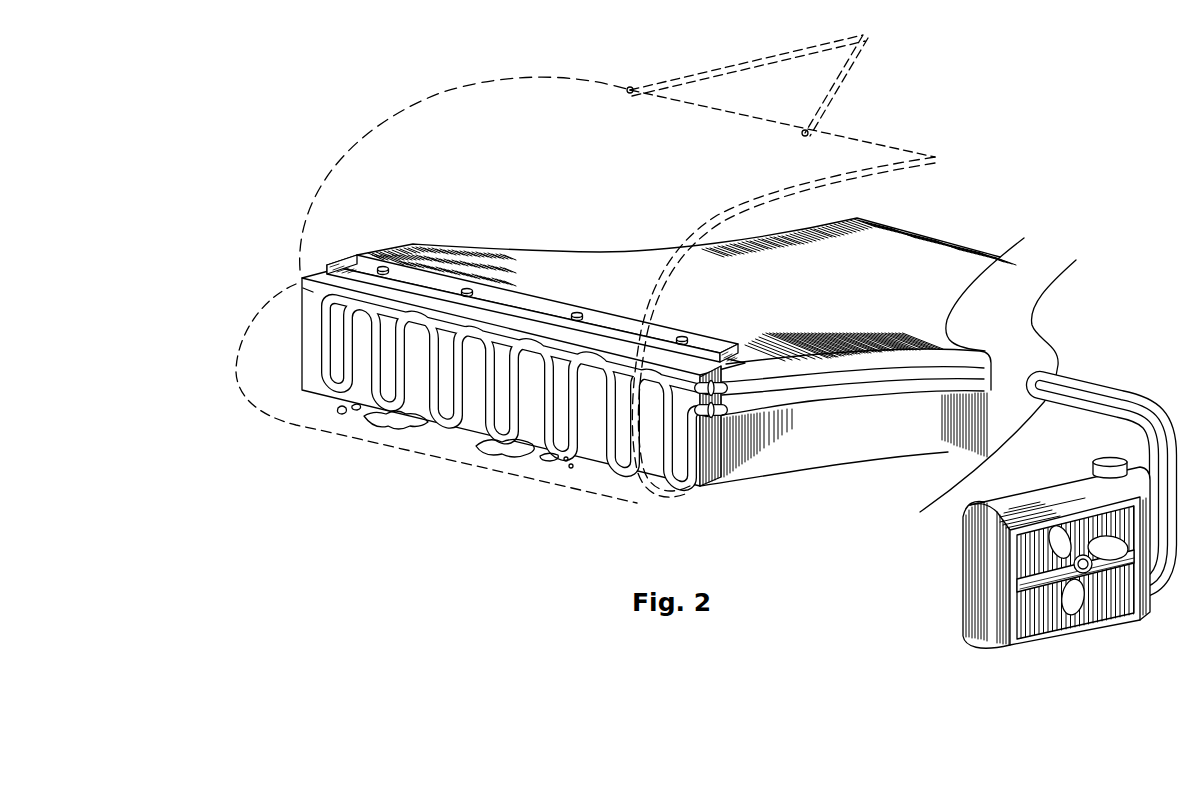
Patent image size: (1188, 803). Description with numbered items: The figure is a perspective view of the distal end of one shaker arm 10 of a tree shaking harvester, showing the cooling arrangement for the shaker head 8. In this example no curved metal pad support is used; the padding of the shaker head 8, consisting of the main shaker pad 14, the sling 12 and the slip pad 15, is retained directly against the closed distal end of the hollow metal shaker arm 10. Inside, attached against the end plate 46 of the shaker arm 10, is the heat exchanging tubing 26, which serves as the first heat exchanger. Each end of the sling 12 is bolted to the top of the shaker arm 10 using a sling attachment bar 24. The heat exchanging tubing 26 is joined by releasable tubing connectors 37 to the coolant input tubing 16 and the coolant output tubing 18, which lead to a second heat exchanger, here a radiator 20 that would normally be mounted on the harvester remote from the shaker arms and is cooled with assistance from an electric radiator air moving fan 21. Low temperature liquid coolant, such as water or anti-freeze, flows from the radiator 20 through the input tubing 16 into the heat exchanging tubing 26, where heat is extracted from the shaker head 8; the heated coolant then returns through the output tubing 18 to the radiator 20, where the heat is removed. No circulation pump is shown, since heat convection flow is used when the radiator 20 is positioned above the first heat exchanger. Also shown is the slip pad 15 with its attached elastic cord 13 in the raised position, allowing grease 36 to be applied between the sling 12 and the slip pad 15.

The shaker head 8 is at (302, 278).
The shaker arm 10 is at (708, 264).
The sling 12 is at (236, 372).
The elastic cord 13 is at (862, 47).
The main shaker pad 14 is at (660, 482).
The slip pad 15 is at (845, 146).
The input coolant tubing 16 is at (912, 366).
The output coolant tubing 18 is at (830, 398).
The radiator 20 is at (980, 583).
The electric radiator air moving fan 21 is at (1087, 574).
The sling attachment bar 24 is at (517, 305).
The heat exchanging tubing 26 is at (440, 413).
The grease 36 is at (497, 452).
The releasable tubing connector 37 is at (733, 372).
The end plate 46 is at (300, 282).